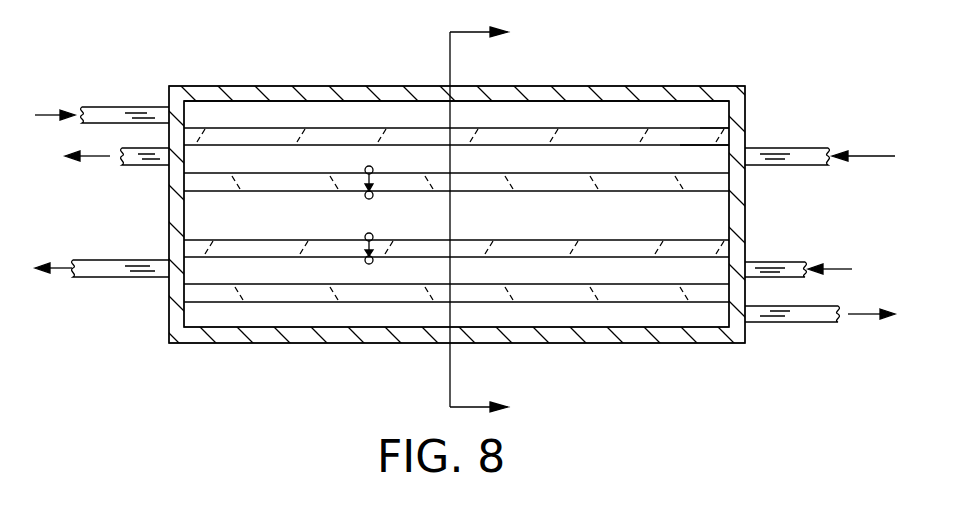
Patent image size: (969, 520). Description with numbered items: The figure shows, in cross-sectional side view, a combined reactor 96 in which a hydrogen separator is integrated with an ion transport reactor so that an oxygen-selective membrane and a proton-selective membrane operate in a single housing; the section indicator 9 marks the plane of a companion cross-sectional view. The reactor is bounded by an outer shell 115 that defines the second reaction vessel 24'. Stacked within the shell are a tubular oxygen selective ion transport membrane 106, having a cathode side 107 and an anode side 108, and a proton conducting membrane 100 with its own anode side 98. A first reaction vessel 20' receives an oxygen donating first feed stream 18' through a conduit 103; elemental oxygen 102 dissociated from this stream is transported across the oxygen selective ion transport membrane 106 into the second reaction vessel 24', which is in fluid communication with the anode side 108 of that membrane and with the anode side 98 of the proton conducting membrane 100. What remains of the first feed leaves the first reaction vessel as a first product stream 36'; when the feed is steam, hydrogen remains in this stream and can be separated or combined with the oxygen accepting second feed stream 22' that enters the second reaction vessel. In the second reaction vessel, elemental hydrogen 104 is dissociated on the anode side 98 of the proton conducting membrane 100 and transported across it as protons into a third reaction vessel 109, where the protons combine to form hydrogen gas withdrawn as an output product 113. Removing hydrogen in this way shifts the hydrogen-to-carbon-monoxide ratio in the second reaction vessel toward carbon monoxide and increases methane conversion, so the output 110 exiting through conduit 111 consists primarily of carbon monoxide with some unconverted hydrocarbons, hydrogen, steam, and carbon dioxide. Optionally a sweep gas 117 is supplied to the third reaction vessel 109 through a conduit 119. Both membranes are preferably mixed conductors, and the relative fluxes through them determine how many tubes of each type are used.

The combined reactor 96 is at (228, 56).
The outer shell 115 is at (522, 86).
The anode side 108 is at (688, 128).
The oxygen selective ion transport membrane 106 is at (718, 137).
The cathode side 107 is at (683, 147).
The first reaction vessel 20' is at (456, 110).
The second reaction vessel 24' is at (495, 210).
The anode side 98 is at (200, 252).
The proton conducting membrane 100 is at (192, 250).
The third reaction vessel 109 is at (528, 268).
The elemental oxygen 102 is at (373, 168).
The elemental hydrogen 104 is at (373, 234).
The oxygen accepting second feed stream 22' is at (102, 89).
The first product stream 36' is at (117, 173).
The output product 113 is at (60, 268).
The conduit 103 is at (781, 165).
The oxygen donating first feed stream 18' is at (863, 180).
The conduit 119 is at (770, 277).
The sweep gas 117 is at (838, 269).
The conduit 111 is at (783, 323).
The output 110 is at (868, 317).
The section line 9- 9 is at (489, 218).